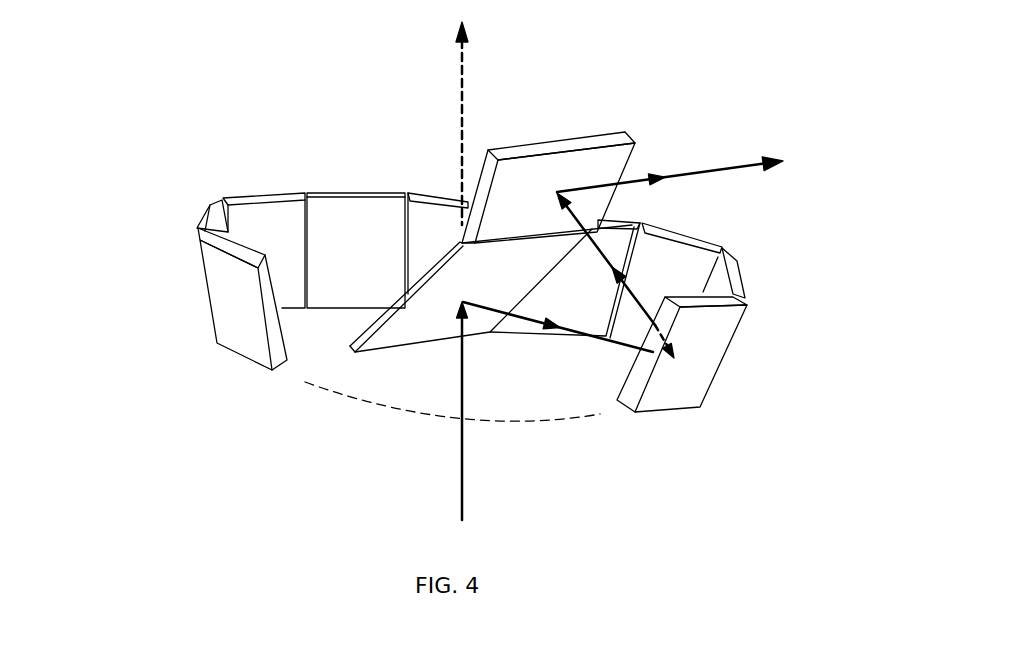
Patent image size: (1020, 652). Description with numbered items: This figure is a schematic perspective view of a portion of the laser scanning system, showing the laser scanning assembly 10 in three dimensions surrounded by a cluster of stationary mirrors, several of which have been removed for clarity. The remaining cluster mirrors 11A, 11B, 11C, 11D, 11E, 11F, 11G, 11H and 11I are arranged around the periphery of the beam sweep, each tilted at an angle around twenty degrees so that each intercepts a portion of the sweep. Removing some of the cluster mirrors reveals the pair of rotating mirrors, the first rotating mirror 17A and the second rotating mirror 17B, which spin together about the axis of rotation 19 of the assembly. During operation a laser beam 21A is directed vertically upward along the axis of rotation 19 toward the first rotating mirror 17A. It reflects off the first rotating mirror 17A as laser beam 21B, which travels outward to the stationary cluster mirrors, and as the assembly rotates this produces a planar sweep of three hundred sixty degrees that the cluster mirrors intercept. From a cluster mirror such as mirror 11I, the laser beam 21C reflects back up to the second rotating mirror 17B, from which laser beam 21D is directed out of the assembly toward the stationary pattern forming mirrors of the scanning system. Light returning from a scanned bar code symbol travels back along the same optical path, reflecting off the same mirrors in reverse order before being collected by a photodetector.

The laser scanning assembly 10 is at (764, 418).
The cluster mirror 11A is at (235, 337).
The cluster mirror 11B is at (212, 212).
The cluster mirror 11C is at (257, 202).
The cluster mirror 11D is at (333, 198).
The cluster mirror 11E is at (433, 197).
The cluster mirror 11F is at (627, 225).
The cluster mirror 11G is at (702, 247).
The cluster mirror 11H is at (733, 278).
The cluster mirror 11I is at (672, 387).
The first rotating mirror 17A is at (362, 327).
The second rotating mirror 17B is at (575, 135).
The axis of rotation 19 is at (462, 103).
The laser beam 21A is at (462, 492).
The laser beam 21B is at (530, 327).
The laser beam 21C is at (598, 253).
The laser beam 21D is at (725, 167).